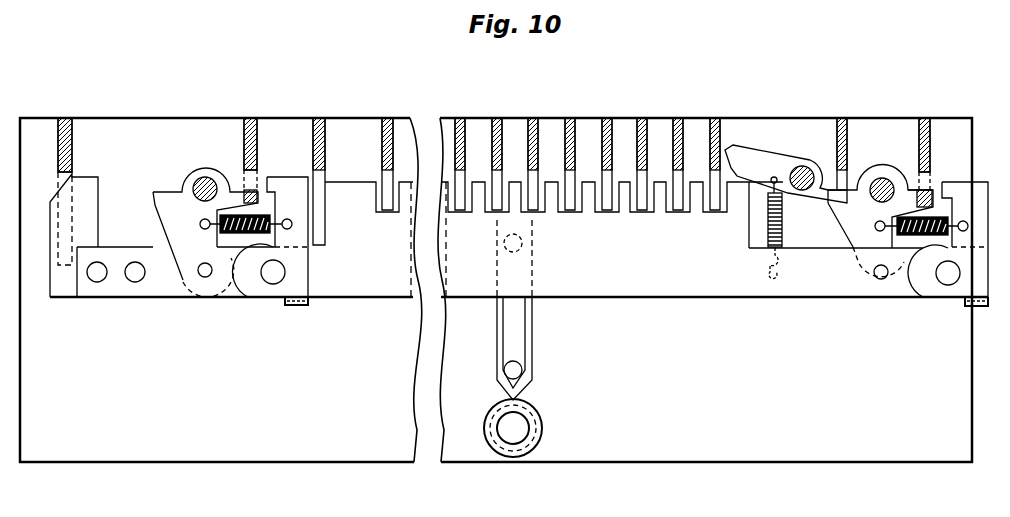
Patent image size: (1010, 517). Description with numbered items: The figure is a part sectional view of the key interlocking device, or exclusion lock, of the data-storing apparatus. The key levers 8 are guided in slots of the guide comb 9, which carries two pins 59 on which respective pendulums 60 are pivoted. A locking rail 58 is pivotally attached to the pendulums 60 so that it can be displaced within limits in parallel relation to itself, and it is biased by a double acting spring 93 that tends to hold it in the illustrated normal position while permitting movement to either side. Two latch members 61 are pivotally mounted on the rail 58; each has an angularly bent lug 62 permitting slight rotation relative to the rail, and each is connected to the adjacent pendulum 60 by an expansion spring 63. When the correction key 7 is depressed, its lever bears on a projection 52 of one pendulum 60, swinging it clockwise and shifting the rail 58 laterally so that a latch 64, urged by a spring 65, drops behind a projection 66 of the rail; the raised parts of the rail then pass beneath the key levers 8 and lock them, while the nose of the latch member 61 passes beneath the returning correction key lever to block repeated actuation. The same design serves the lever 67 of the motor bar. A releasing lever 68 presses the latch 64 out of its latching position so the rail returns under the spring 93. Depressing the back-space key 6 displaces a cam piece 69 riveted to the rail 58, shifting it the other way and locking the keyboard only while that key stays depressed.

The back-space key 6 is at (62, 125).
The correction key 7 is at (924, 188).
The key lever 8 is at (638, 118).
The guide comb 9 is at (403, 383).
The projection 52 is at (913, 197).
The locking rail 58 is at (357, 213).
The pin 59 is at (208, 186).
The pendulum 60 is at (167, 200).
The latch member 61 is at (290, 190).
The angularly bent lug 62 is at (298, 305).
The expansion spring 63 is at (242, 235).
The latch 64 is at (753, 160).
The spring 65 is at (790, 215).
The projection 66 is at (740, 203).
The lever 67 is at (248, 187).
The releasing lever 68 is at (837, 125).
The cam piece 69 is at (85, 190).
The double acting spring 93 is at (528, 347).